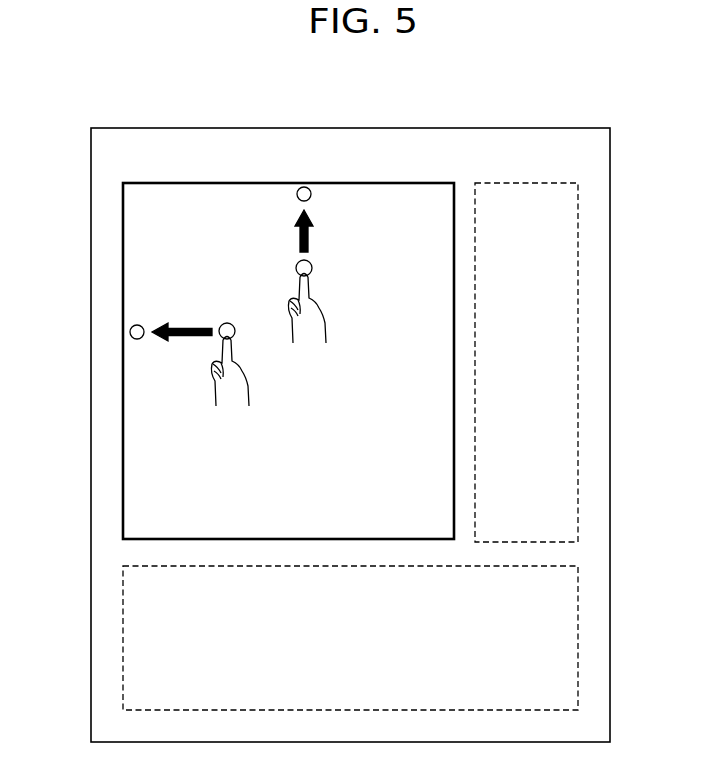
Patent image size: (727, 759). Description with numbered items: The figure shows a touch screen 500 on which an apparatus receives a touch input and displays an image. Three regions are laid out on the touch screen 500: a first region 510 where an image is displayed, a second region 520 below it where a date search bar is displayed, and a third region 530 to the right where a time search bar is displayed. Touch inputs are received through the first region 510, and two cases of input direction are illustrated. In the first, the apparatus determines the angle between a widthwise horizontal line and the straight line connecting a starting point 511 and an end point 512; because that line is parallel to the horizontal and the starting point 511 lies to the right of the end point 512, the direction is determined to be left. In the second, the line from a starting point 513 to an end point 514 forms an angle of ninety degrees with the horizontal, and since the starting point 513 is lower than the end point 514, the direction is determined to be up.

The touch screen 500 is at (357, 128).
The first region 510 is at (123, 378).
The starting point 511 is at (227, 323).
The end point 512 is at (143, 325).
The starting point 513 is at (312, 268).
The end point 514 is at (311, 194).
The second region 520 is at (123, 615).
The third region 530 is at (578, 253).